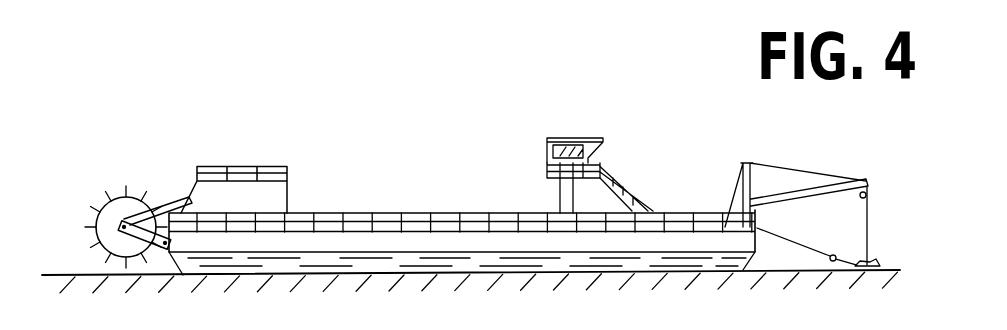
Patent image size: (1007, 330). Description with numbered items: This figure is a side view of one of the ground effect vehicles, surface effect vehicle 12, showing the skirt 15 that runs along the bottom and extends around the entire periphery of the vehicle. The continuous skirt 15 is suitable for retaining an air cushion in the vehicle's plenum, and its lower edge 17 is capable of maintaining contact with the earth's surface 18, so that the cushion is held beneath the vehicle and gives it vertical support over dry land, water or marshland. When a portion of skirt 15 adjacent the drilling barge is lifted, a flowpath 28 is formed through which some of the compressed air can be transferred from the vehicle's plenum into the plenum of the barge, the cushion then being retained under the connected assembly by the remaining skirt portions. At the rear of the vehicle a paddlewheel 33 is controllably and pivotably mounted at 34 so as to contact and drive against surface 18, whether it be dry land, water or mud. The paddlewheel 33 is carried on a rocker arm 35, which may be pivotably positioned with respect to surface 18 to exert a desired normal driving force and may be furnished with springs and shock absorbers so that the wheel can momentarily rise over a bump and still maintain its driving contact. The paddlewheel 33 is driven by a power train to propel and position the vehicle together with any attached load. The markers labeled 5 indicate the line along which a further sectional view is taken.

The barge 12 is at (732, 135).
The hull bottom 15 is at (673, 262).
The stern 17 is at (735, 273).
The ground bed 18 is at (889, 268).
The anchor cable 28 is at (763, 258).
The cutter wheel 33 is at (77, 208).
The support arm 34 is at (166, 236).
The pivot 35 is at (125, 221).
The section line 5- 5 is at (523, 313).